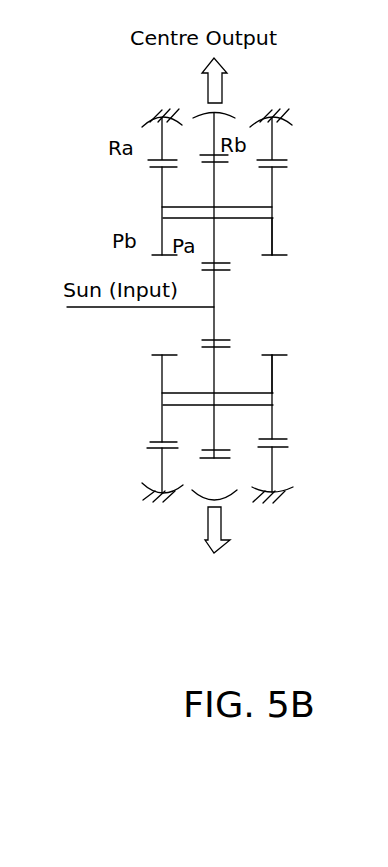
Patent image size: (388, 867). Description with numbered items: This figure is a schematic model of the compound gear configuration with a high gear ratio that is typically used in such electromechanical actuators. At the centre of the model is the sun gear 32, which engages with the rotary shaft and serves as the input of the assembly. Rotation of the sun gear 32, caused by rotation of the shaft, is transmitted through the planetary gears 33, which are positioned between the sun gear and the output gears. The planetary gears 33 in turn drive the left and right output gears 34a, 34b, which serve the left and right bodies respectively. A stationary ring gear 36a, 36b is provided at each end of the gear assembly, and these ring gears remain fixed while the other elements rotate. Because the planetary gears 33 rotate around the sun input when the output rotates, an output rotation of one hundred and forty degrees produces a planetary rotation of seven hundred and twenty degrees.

The sun gear 32 is at (90, 310).
The planetary gears 33 is at (278, 255).
The left output gear 34a is at (230, 543).
The right output gear 34b is at (225, 70).
The stationary ring gear 36a is at (275, 468).
The stationary ring gear 36b is at (158, 121).